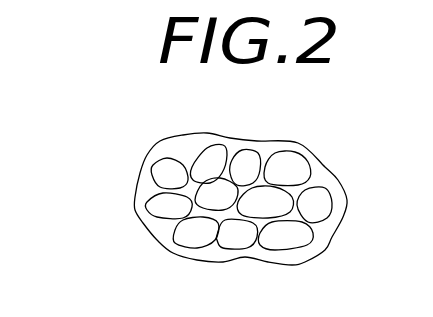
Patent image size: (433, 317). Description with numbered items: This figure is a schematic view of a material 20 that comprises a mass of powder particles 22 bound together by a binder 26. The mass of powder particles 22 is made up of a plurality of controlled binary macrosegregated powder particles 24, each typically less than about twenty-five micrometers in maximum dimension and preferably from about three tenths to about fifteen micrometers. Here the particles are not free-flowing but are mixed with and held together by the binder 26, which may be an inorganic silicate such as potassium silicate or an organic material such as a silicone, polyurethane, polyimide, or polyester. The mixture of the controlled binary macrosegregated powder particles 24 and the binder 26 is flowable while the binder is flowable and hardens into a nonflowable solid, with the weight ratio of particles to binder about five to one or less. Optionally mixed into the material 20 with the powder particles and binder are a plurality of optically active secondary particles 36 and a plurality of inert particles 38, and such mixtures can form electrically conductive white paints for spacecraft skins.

The material 20 is at (162, 142).
The mass of powder particles 22 is at (248, 162).
The controlled binary macrosegregated powder particle 24 is at (325, 205).
The binder 26 is at (145, 187).
The optically active secondary particles 36 is at (190, 235).
The inert particles 38 is at (287, 238).